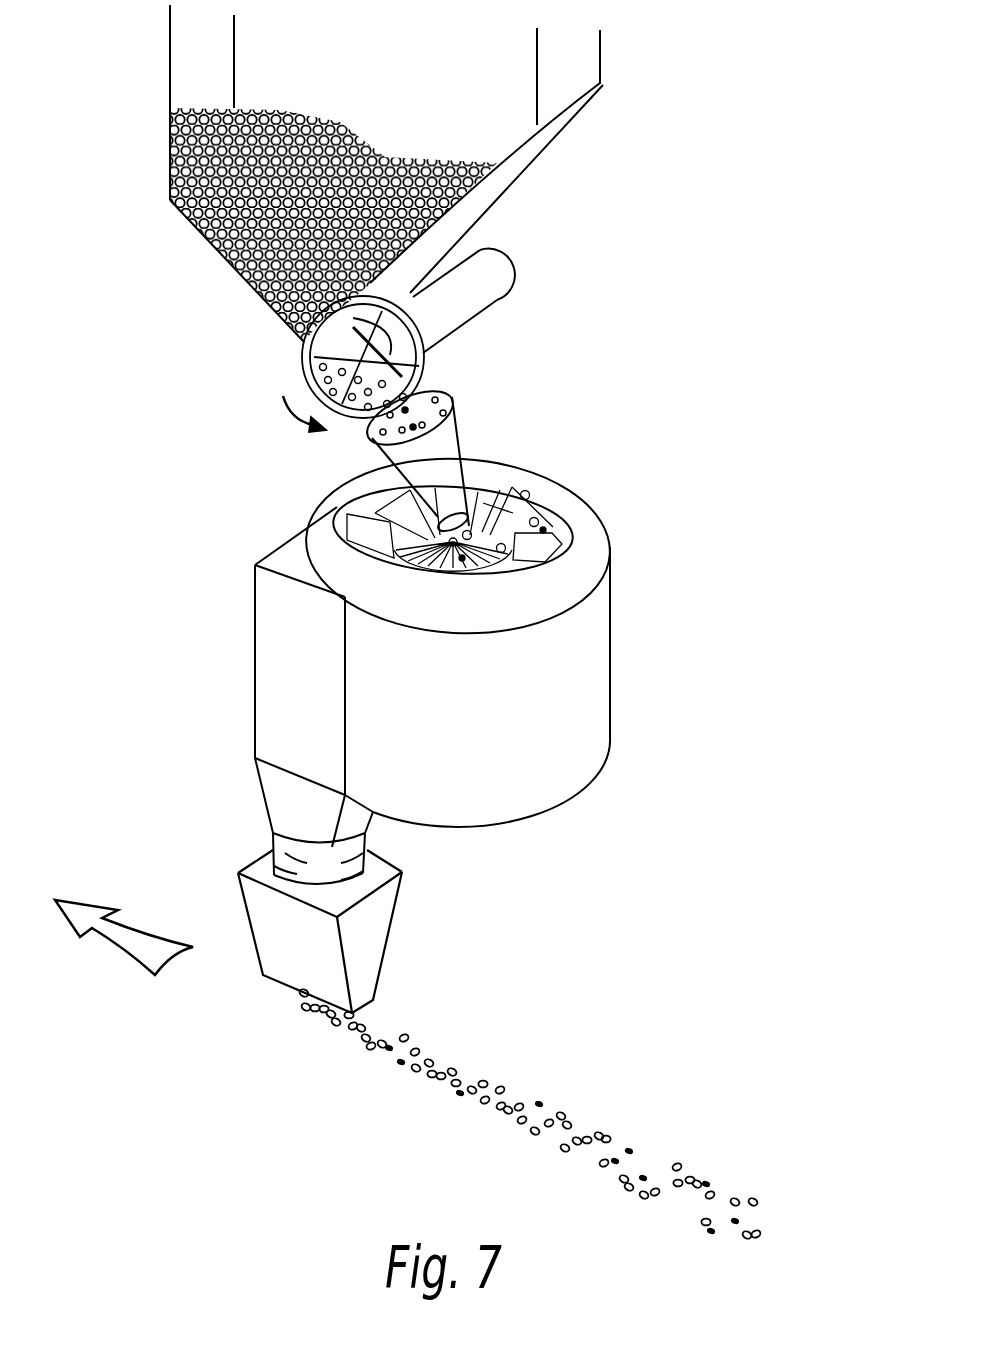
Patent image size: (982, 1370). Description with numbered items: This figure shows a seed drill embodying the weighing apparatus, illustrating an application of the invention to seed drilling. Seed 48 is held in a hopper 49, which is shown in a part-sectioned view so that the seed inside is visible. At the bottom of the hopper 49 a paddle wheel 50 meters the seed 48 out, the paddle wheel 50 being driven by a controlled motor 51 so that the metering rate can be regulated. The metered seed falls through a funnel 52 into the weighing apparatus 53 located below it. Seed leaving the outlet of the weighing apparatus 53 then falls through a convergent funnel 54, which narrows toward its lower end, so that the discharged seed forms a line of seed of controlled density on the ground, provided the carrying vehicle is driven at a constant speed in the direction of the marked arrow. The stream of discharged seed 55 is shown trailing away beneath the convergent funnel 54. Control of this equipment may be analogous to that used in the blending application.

The seed 48 is at (363, 137).
The hopper 49 is at (180, 68).
The paddle wheel 50 is at (400, 373).
The controlled motor 51 is at (488, 285).
The funnel 52 is at (445, 450).
The weighing apparatus 53 is at (577, 709).
The convergent funnel 54 is at (375, 937).
The discharged pellets 55 is at (562, 1116).